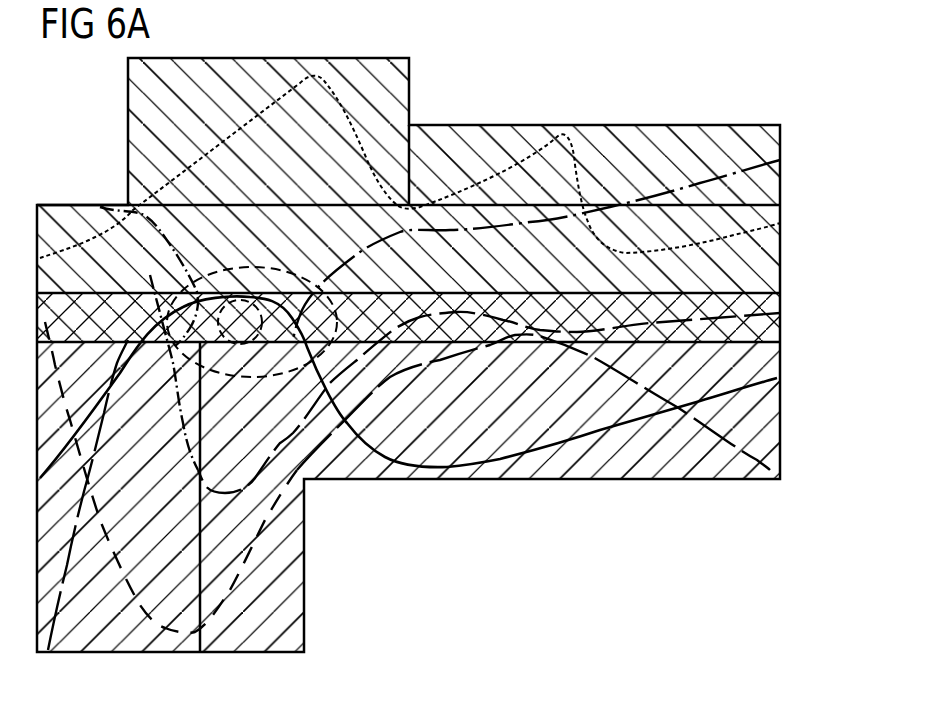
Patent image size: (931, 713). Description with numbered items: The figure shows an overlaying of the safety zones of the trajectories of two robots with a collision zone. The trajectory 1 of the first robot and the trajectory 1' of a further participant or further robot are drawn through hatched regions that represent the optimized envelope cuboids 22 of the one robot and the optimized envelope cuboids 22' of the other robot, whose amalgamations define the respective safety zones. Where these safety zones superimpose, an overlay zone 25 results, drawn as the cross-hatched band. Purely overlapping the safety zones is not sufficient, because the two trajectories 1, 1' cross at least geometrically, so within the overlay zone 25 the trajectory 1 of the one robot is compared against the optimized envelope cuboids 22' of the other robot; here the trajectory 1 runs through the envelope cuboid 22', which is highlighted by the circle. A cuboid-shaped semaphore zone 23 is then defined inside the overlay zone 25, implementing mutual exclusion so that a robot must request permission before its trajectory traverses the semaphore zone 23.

The trajectory 1 is at (421, 387).
The trajectory 1' is at (414, 366).
The optimized envelope cuboid 22 is at (408, 497).
The optimized envelope cuboid 22' is at (438, 175).
The semaphore zone 23 is at (266, 322).
The overlay zone 25 is at (773, 306).